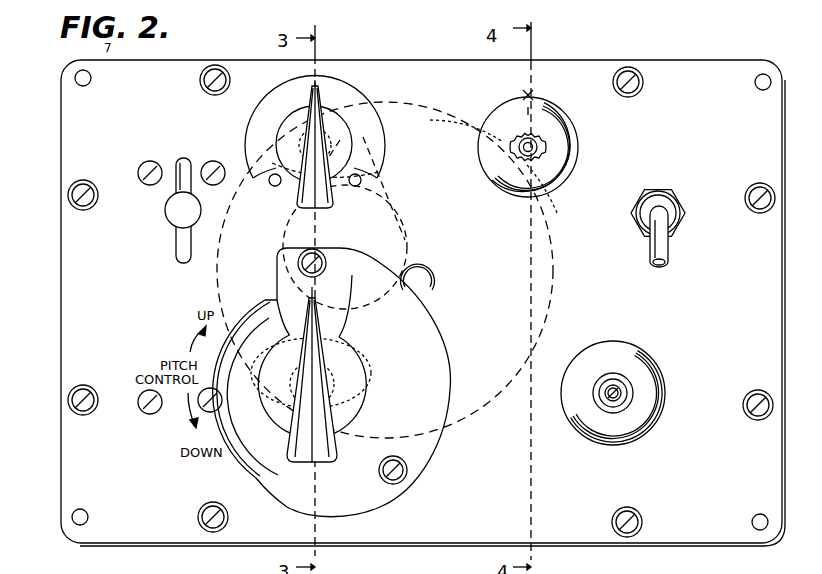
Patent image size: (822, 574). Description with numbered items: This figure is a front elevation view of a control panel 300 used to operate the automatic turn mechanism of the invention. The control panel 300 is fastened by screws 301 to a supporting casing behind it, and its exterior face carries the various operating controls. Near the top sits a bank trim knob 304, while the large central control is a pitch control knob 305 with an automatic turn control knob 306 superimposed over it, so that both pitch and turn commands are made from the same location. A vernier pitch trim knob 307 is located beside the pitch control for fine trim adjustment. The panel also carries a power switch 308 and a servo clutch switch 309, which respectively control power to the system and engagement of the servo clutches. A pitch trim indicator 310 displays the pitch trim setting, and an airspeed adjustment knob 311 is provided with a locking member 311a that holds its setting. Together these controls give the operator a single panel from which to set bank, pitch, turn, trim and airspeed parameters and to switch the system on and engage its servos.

The control panel 300 is at (413, 55).
The screws 301 is at (68, 197).
The bank trim knob 304 is at (297, 128).
The pitch control knob 305 is at (253, 452).
The automatic turn control knob 306 is at (318, 432).
The vernier pitch trim knob 307 is at (424, 307).
The power switch 308 is at (665, 247).
The servo clutch switch 309 is at (187, 242).
The pitch trim indicator 310 is at (547, 113).
The airspeed adjustment knob 311 is at (623, 415).
The locking member 311a is at (732, 378).